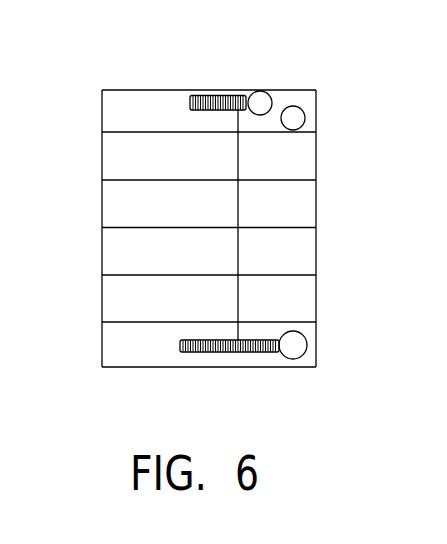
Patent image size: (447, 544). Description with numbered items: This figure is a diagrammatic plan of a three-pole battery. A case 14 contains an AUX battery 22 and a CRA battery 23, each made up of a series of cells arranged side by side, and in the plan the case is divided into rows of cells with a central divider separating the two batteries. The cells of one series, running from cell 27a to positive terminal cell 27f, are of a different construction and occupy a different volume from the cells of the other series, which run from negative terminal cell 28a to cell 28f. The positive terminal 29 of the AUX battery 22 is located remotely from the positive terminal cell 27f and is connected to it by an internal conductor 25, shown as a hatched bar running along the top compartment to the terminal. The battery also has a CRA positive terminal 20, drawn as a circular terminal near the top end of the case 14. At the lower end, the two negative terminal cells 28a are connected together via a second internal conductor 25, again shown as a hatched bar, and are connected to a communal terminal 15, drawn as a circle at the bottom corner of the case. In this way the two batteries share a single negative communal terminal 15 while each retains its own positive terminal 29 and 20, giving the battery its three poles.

The case 14 is at (317, 252).
The communal terminal 15 is at (293, 350).
The CRA positive terminal 20 is at (298, 120).
The AUX battery 22 is at (117, 252).
The CRA battery 23 is at (298, 163).
The internal conductor 25 is at (205, 96).
The cell 27a is at (160, 347).
The positive terminal cell 27f is at (209, 115).
The negative terminal cell 28a is at (308, 333).
The cell 28f is at (285, 100).
The positive terminal 29 is at (258, 102).